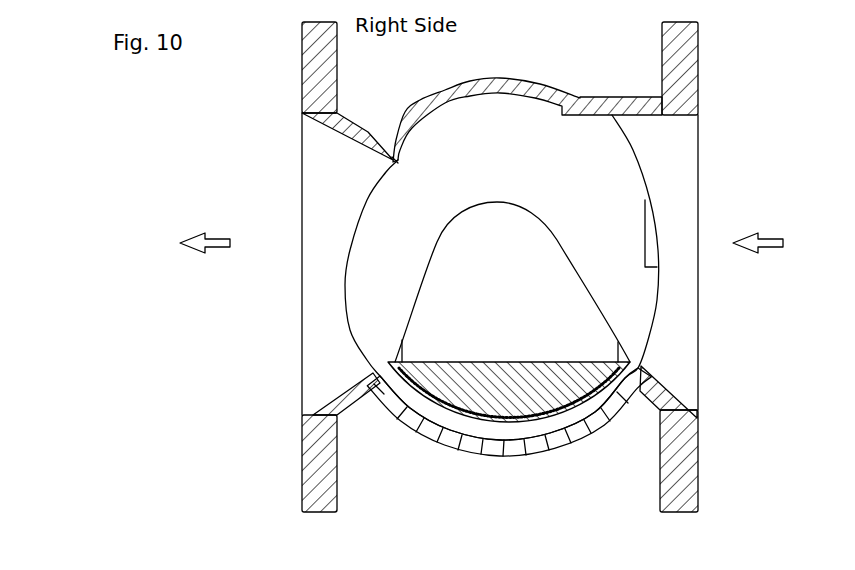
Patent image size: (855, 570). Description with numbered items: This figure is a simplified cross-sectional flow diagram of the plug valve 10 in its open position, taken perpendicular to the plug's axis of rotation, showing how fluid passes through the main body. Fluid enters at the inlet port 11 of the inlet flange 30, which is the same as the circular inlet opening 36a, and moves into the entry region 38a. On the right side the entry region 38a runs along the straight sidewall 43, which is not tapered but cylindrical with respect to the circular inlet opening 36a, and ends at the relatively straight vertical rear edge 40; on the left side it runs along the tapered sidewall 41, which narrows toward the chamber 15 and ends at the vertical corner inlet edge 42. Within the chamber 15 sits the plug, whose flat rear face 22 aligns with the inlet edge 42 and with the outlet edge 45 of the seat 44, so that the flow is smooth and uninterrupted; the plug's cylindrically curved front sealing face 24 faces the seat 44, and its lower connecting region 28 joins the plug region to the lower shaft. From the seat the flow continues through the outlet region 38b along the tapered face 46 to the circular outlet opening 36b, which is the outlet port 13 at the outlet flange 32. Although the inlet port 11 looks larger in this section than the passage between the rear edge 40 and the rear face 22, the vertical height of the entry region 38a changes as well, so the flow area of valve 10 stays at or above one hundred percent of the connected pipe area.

The plug valve 10 is at (180, 305).
The inlet port 11 is at (777, 255).
The outlet port 13 is at (226, 255).
The chamber 15 is at (507, 157).
The rear face 22 is at (565, 360).
The front sealing face 24 is at (545, 428).
The lower connecting region 28 is at (512, 282).
The inlet flange 30 is at (687, 34).
The outlet flange 32 is at (318, 55).
The circular inlet opening 36a is at (672, 115).
The circular outlet opening 36b is at (312, 115).
The entry region 38a is at (673, 181).
The outlet region 38b is at (330, 252).
The rear edge 40 is at (566, 92).
The tapered sidewall 41 is at (666, 391).
The inlet edge 42 is at (642, 370).
The straight sidewall 43 is at (645, 200).
The seat 44 is at (385, 135).
The outlet edge 45 is at (390, 167).
The tapered face 46 is at (393, 163).